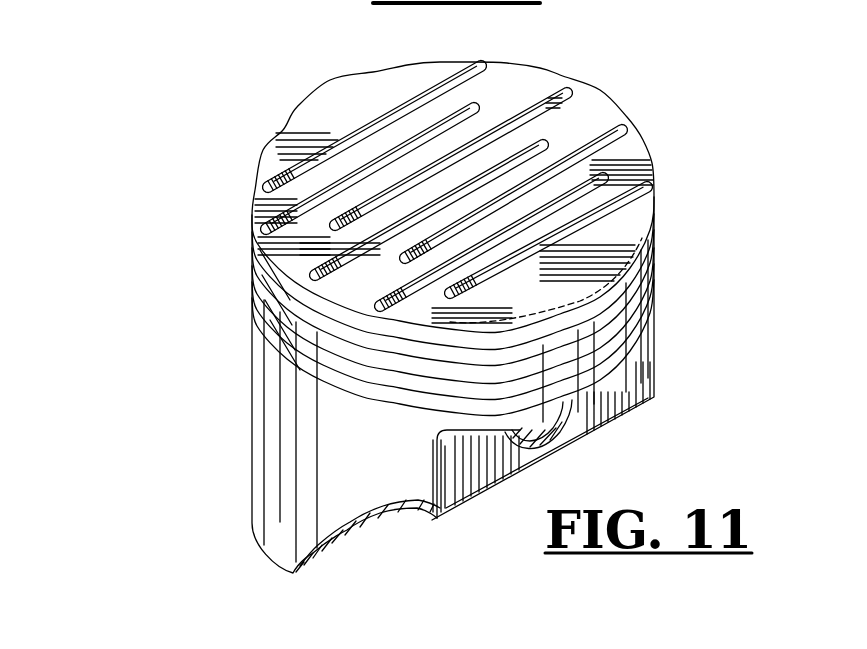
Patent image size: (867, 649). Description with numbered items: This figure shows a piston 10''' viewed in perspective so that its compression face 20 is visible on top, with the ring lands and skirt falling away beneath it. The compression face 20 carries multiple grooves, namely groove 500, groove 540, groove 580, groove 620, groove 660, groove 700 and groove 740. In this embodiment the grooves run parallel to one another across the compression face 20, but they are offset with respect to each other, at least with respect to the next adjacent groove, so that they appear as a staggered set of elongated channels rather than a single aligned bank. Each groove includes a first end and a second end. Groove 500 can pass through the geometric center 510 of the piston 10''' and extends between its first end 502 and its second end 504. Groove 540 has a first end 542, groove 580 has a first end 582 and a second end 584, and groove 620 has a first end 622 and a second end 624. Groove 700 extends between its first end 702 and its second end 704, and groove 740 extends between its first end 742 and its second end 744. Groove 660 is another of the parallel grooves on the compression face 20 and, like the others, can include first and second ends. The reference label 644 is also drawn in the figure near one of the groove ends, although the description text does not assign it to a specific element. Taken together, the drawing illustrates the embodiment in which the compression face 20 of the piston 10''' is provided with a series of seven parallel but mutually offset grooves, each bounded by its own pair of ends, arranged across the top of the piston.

The piston 10''' is at (363, 307).
The compression face 20 is at (528, 78).
The groove 660 is at (590, 88).
The second end 744 is at (286, 177).
The groove 740 is at (417, 95).
The first end 742 is at (483, 73).
The groove 700 is at (256, 205).
The second end 704 is at (257, 228).
The first end 702 is at (474, 107).
The geometric center 510 is at (460, 162).
The first end 502 is at (538, 143).
The first end 542 is at (621, 130).
The groove 540 is at (641, 135).
The groove end 644 is at (414, 262).
The first end 582 is at (648, 157).
The second end 624 is at (420, 315).
The first end 622 is at (651, 184).
The groove 620 is at (498, 262).
The groove 500 is at (253, 278).
The second end 504 is at (253, 303).
The groove 580 is at (253, 345).
The second end 584 is at (253, 417).